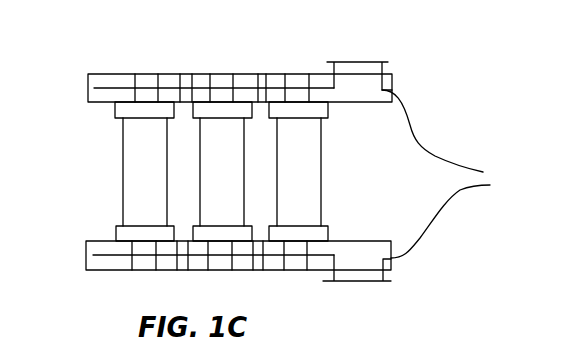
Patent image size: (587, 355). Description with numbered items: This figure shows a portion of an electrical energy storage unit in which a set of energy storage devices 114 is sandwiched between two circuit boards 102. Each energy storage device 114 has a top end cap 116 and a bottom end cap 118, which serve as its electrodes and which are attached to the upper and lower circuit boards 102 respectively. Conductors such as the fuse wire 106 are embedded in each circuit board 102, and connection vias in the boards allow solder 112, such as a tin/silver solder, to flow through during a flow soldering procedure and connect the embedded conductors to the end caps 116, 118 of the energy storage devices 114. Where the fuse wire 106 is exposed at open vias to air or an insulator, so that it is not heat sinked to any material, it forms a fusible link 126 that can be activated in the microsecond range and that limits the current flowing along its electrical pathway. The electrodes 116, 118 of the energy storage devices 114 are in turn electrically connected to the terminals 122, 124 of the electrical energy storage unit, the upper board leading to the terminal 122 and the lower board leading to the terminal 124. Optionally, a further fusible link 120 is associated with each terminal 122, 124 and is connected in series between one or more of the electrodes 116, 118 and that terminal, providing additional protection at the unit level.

The circuit board 102 is at (118, 80).
The fuse wire 106 is at (112, 89).
The solder 112 is at (147, 80).
The energy storage device 114 is at (137, 153).
The top end cap 116 is at (125, 112).
The bottom end cap 118 is at (128, 229).
The fusible link 120 is at (353, 62).
The terminal 122 is at (418, 138).
The terminal 124 is at (432, 223).
The fusible link 126 is at (183, 85).